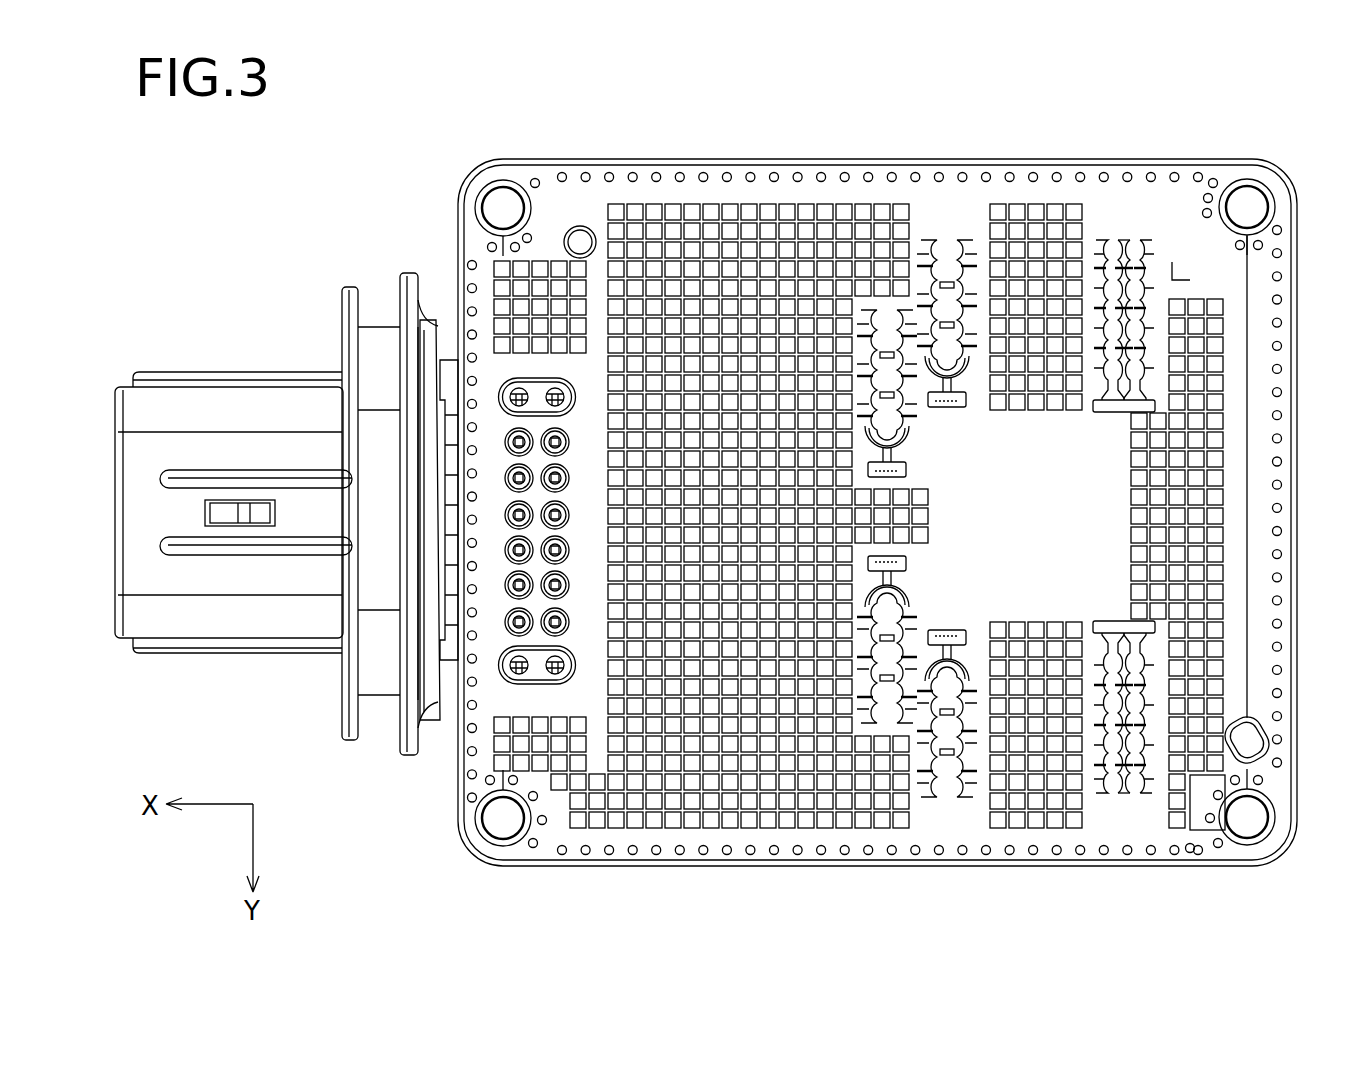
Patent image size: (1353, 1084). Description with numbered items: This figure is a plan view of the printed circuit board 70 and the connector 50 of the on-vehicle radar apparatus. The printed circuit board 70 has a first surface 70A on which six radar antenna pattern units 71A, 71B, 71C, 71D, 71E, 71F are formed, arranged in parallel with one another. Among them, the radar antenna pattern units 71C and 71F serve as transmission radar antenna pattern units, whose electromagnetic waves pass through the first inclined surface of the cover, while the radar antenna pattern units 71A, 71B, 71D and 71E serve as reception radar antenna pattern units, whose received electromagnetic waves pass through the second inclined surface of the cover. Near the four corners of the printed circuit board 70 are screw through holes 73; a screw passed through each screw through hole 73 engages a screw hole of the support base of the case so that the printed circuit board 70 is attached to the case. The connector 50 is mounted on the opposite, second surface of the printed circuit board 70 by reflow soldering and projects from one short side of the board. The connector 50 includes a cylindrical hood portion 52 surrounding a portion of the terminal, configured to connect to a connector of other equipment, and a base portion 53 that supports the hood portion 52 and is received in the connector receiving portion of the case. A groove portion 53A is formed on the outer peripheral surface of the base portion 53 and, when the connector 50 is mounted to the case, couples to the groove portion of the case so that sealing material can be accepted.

The connector 50 is at (113, 383).
The hood portion 52 is at (230, 412).
The base portion 53 is at (390, 305).
The groove portion 53A is at (408, 668).
The printed circuit board 70 is at (1046, 153).
The first surface 70A is at (943, 215).
The radar antenna pattern unit 71A is at (905, 310).
The radar antenna pattern unit 71B is at (968, 240).
The radar antenna pattern unit 71C is at (1140, 240).
The radar antenna pattern unit 71D is at (905, 725).
The radar antenna pattern unit 71E is at (968, 797).
The radar antenna pattern unit 71F is at (1138, 793).
The screw through hole 73 is at (493, 203).